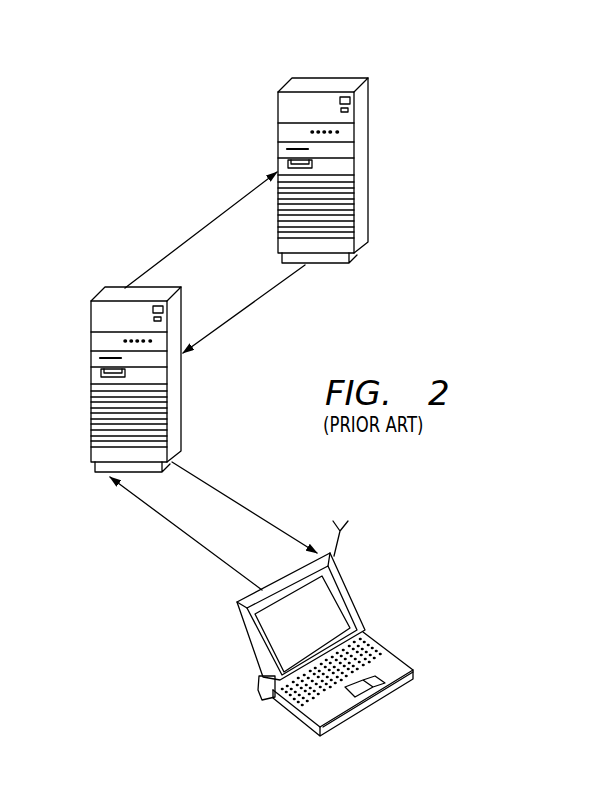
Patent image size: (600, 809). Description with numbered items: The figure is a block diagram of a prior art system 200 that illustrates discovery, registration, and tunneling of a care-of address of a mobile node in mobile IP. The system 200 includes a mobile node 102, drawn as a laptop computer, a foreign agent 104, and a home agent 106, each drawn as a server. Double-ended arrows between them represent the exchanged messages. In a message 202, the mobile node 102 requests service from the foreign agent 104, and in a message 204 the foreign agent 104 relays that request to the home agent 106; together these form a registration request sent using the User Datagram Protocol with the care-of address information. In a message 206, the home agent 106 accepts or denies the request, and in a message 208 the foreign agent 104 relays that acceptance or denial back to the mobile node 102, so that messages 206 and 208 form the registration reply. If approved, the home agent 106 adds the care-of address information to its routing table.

The system 200 is at (462, 103).
The mobile node 102 is at (349, 712).
The foreign agent 104 is at (91, 322).
The home agent 106 is at (367, 134).
The message 202 is at (193, 538).
The message 204 is at (208, 222).
The message 206 is at (242, 313).
The message 208 is at (233, 495).